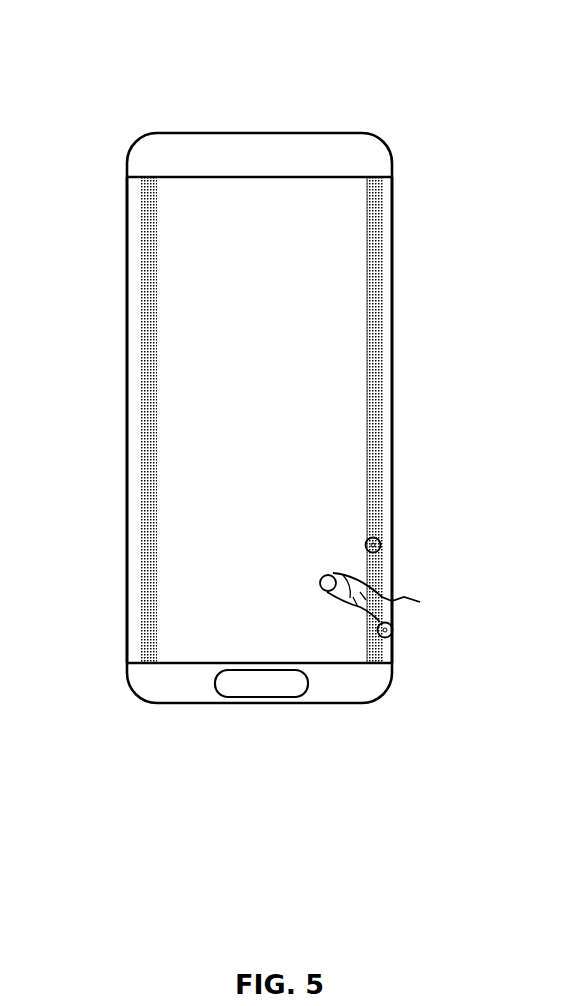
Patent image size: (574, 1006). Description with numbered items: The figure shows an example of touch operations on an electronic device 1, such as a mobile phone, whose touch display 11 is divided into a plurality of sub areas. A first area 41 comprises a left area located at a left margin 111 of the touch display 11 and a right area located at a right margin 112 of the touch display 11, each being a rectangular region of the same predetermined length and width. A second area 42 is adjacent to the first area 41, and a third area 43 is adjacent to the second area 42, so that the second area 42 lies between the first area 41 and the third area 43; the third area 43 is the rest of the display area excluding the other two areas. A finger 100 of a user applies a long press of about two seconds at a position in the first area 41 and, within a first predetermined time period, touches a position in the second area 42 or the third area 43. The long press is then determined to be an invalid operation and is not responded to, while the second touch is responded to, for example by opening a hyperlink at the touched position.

The electronic device 1 is at (272, 103).
The touch display 11 is at (352, 228).
The left margin 111 is at (127, 265).
The right margin 112 is at (393, 210).
The first area 41 is at (140, 350).
The second area 42 is at (140, 465).
The third area 43 is at (348, 460).
The finger 100 is at (385, 582).